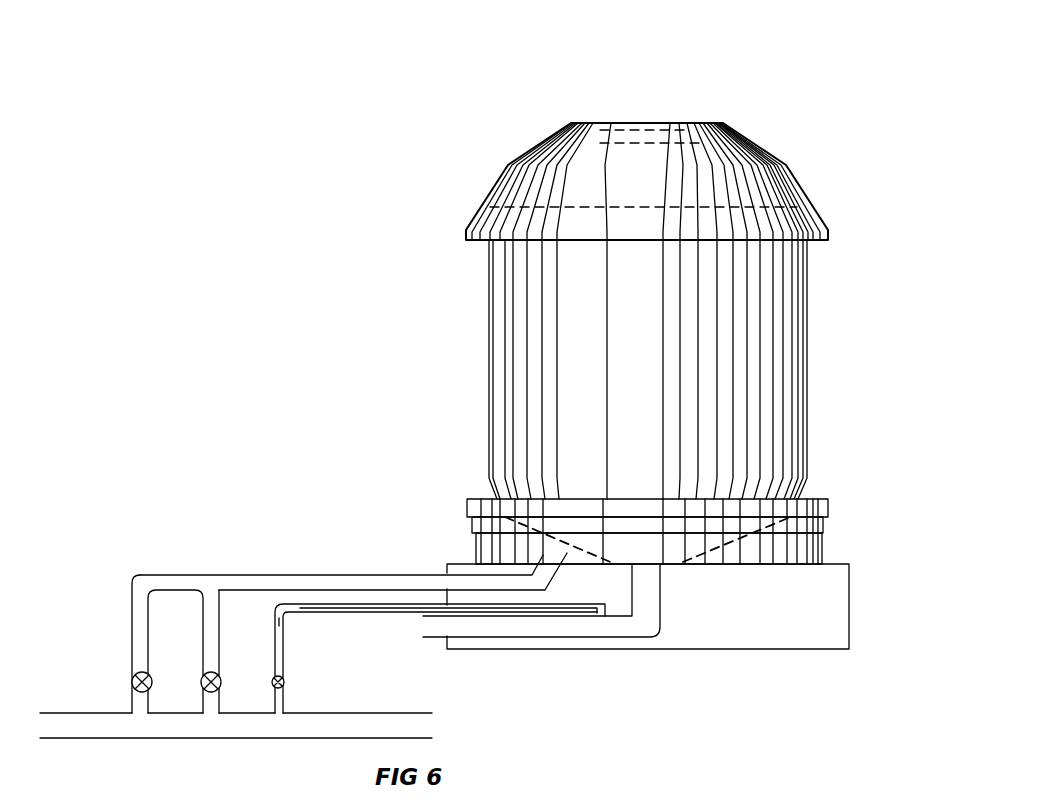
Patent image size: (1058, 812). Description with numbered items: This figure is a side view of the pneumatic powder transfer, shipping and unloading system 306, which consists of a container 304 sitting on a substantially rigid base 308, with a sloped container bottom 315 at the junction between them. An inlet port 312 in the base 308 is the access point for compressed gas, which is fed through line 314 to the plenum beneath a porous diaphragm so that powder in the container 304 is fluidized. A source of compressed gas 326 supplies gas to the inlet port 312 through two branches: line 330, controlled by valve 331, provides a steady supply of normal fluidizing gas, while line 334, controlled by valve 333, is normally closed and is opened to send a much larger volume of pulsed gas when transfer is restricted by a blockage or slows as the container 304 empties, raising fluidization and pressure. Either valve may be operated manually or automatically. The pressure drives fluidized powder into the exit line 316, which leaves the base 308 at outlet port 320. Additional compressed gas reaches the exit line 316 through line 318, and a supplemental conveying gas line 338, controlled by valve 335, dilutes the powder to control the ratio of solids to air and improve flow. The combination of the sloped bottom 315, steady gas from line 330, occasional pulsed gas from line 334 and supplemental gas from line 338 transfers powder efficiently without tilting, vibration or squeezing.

The shipping and unloading system 306 is at (447, 112).
The container 304 is at (489, 283).
The line 314 is at (542, 560).
The sloped container bottom 315 is at (737, 540).
The base 308 is at (780, 593).
The inlet port 312 is at (430, 578).
The line 330 is at (137, 632).
The line 334 is at (208, 610).
The source of compressed gas 326 is at (163, 725).
The valve 331 is at (132, 677).
The valve 333 is at (219, 680).
The outlet port 320 is at (447, 627).
The line 318 is at (527, 610).
The exit line 316 is at (660, 610).
The valve 335 is at (284, 680).
The supplemental conveying gas line 338 is at (280, 622).